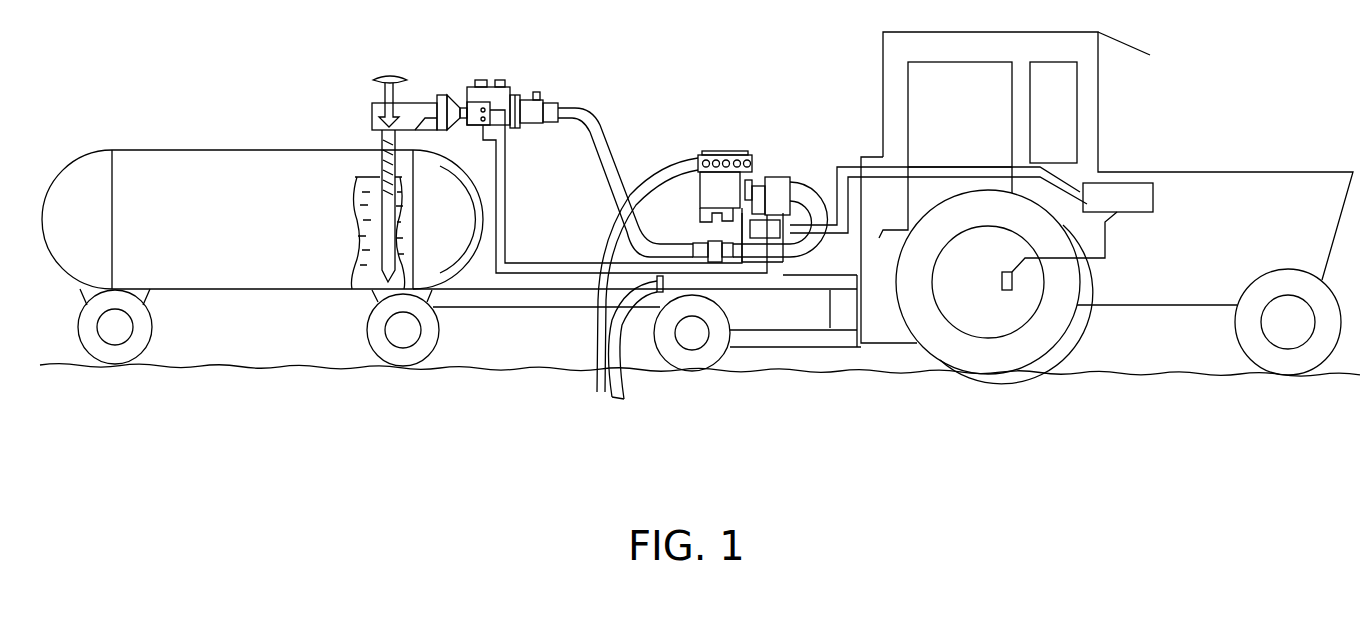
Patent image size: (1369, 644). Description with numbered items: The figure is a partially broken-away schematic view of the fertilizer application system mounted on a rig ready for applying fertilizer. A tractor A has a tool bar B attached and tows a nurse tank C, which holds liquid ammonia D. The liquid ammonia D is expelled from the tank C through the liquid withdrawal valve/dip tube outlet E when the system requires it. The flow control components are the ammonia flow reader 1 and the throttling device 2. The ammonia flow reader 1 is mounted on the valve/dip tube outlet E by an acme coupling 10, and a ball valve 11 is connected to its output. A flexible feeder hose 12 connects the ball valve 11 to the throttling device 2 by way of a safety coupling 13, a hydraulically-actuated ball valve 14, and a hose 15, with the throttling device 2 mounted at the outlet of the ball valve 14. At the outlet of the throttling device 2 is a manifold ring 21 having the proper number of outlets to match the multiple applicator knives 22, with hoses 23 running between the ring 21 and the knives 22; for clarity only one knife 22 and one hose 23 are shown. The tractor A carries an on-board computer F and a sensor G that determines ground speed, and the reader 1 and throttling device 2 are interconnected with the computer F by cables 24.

The ammonia flow reader 1 is at (520, 86).
The throttling device 2 is at (756, 176).
The acme coupling 10 is at (465, 95).
The ball valve 11 is at (545, 101).
The flexible feeder hose 12 is at (585, 110).
The safety coupling 13 is at (717, 256).
The hydraulically-actuated ball valve 14 is at (783, 180).
The hose 15 is at (810, 262).
The manifold ring 21 is at (700, 153).
The applicator knife 22 is at (628, 395).
The hose 23 is at (588, 293).
The cables 24 is at (507, 232).
The tractor A is at (1245, 178).
The tool bar B is at (797, 347).
The nurse tank C is at (210, 152).
The liquid ammonia D is at (357, 172).
The liquid withdrawal valve/dip tube outlet E is at (370, 104).
The on-board computer F is at (1136, 206).
The sensor G is at (1002, 283).